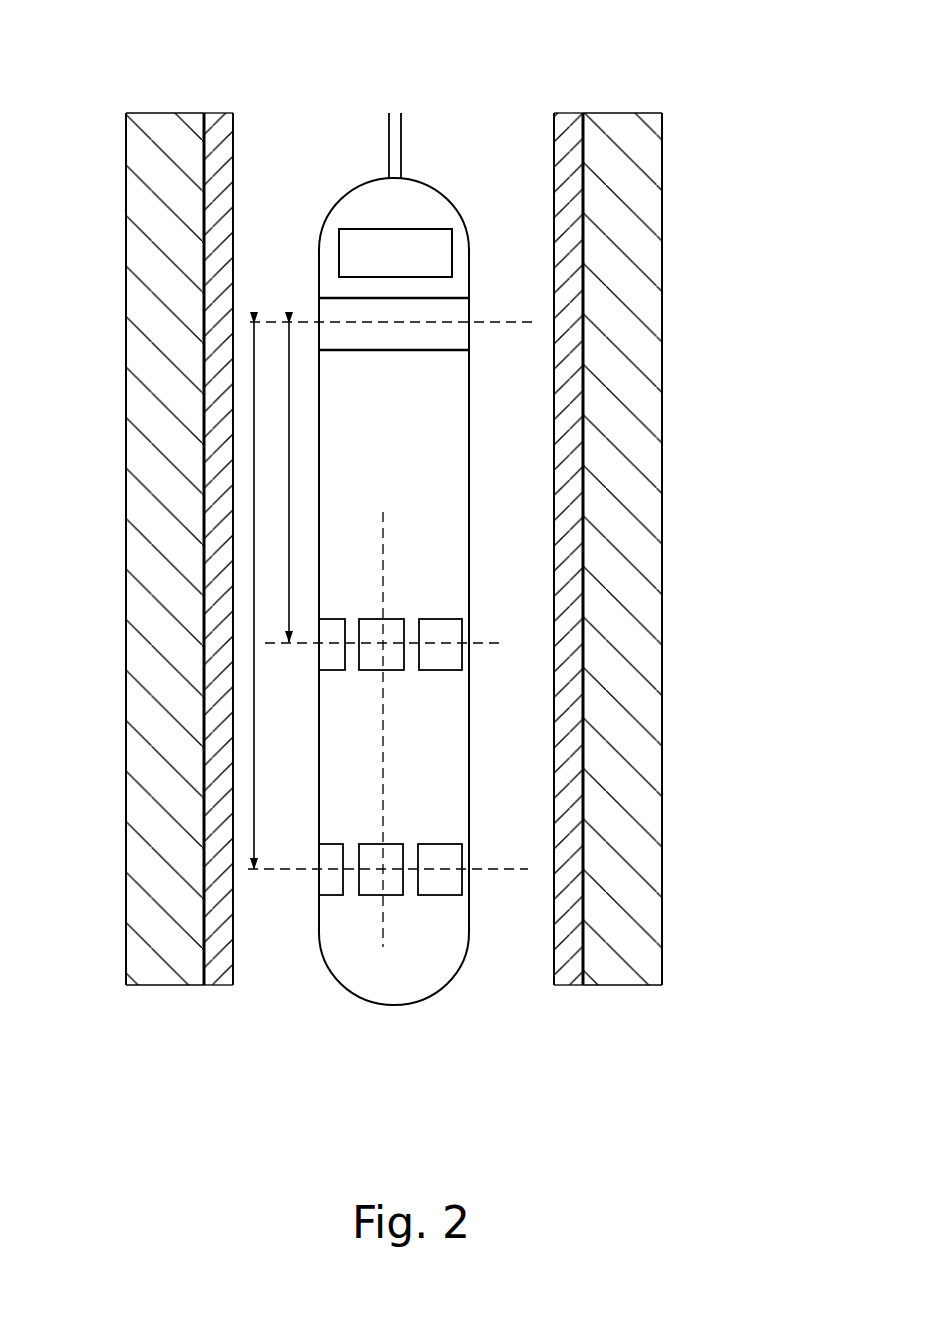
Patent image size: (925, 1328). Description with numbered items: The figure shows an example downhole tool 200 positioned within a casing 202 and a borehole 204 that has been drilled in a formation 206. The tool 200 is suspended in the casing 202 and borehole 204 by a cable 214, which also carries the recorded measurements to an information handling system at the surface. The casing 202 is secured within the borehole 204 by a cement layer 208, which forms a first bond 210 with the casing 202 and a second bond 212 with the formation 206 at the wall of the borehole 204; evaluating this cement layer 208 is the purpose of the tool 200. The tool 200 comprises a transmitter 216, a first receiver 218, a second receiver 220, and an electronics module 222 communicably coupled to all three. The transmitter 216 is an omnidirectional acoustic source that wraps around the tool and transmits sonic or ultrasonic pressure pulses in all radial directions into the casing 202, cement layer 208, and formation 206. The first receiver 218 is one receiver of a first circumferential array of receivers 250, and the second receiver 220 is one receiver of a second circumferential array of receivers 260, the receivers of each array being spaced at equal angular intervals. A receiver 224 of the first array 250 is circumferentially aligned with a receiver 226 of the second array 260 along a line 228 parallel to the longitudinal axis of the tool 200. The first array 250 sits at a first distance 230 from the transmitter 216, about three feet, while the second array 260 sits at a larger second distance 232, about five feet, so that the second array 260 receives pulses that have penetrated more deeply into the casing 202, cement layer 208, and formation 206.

The downhole tool 200 is at (404, 506).
The casing 202 is at (583, 153).
The borehole 204 is at (662, 283).
The formation 206 is at (807, 397).
The cement layer 208 is at (621, 497).
The first bond 210 is at (583, 590).
The second bond 212 is at (662, 730).
The cable 214 is at (388, 142).
The transmitter 216 is at (470, 312).
The first receiver 218 is at (452, 618).
The second receiver 220 is at (440, 844).
The electronics module 222 is at (339, 243).
The receiver 224 is at (371, 627).
The receiver 226 is at (390, 897).
The line 228 is at (383, 762).
The first distance 230 is at (289, 435).
The second distance 232 is at (254, 803).
The first circumferential array of receivers 250 is at (445, 600).
The second circumferential array of receivers 260 is at (332, 832).